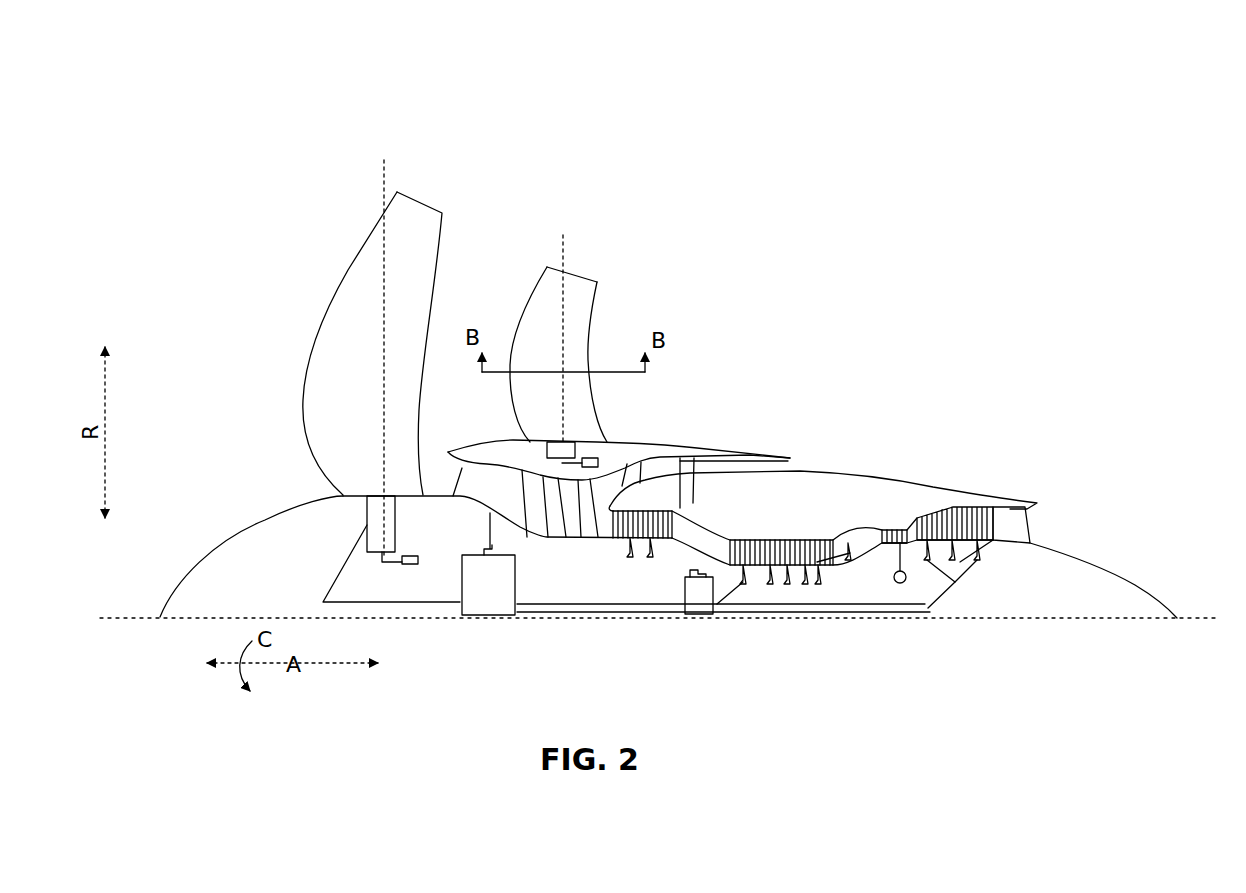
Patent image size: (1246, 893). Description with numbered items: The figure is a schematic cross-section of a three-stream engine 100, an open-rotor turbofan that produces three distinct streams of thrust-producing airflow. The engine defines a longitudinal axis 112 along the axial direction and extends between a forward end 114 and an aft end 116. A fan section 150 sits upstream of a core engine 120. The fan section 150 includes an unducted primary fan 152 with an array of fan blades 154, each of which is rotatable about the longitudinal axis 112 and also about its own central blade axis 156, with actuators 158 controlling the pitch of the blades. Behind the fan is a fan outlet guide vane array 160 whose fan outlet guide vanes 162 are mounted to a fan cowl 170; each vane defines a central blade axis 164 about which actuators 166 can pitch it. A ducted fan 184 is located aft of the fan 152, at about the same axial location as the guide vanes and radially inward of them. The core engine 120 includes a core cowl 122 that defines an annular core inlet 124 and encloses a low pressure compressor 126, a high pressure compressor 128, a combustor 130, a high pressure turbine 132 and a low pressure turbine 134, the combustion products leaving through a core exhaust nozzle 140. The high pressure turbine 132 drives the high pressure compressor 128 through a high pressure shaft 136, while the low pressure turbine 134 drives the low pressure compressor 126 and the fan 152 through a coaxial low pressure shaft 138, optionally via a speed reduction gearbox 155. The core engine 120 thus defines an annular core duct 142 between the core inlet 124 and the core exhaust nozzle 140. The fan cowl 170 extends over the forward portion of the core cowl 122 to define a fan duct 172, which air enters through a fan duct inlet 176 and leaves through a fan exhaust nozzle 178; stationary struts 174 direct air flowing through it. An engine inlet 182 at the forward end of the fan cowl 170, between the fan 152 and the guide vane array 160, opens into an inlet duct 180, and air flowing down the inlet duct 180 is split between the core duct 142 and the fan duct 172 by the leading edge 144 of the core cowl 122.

The three-stream engine 100 is at (726, 219).
The longitudinal axis 112 is at (1211, 631).
The forward end 114 is at (160, 617).
The aft end 116 is at (1177, 618).
The core engine 120 is at (808, 532).
The core cowl 122 is at (810, 473).
The core inlet 124 is at (604, 534).
The low pressure compressor 126 is at (642, 551).
The high pressure compressor 128 is at (798, 578).
The combustor 130 is at (849, 564).
The high pressure turbine 132 is at (901, 517).
The low pressure turbine 134 is at (960, 502).
The high pressure shaft 136 is at (913, 565).
The low pressure shaft 138 is at (335, 580).
The core exhaust nozzle 140 is at (1010, 523).
The core duct 142 is at (861, 536).
The leading edge 144 is at (626, 539).
The fan section 150 is at (250, 234).
The fan 152 is at (269, 383).
The fan blades 154 is at (355, 295).
The speed reduction gearbox 155 is at (487, 598).
The central blade axis 156 is at (390, 180).
The actuators 158 is at (416, 548).
The fan outlet guide vane array 160 is at (491, 289).
The fan outlet guide vanes 162 is at (577, 347).
The central blade axis 164 is at (565, 258).
The actuators 166 is at (594, 457).
The fan cowl 170 is at (660, 466).
The fan duct 172 is at (686, 458).
The stationary struts 174 is at (700, 447).
The fan duct inlet 176 is at (606, 497).
The fan exhaust nozzle 178 is at (793, 452).
The inlet duct 180 is at (533, 523).
The engine inlet 182 is at (446, 475).
The ducted fan 184 is at (553, 493).